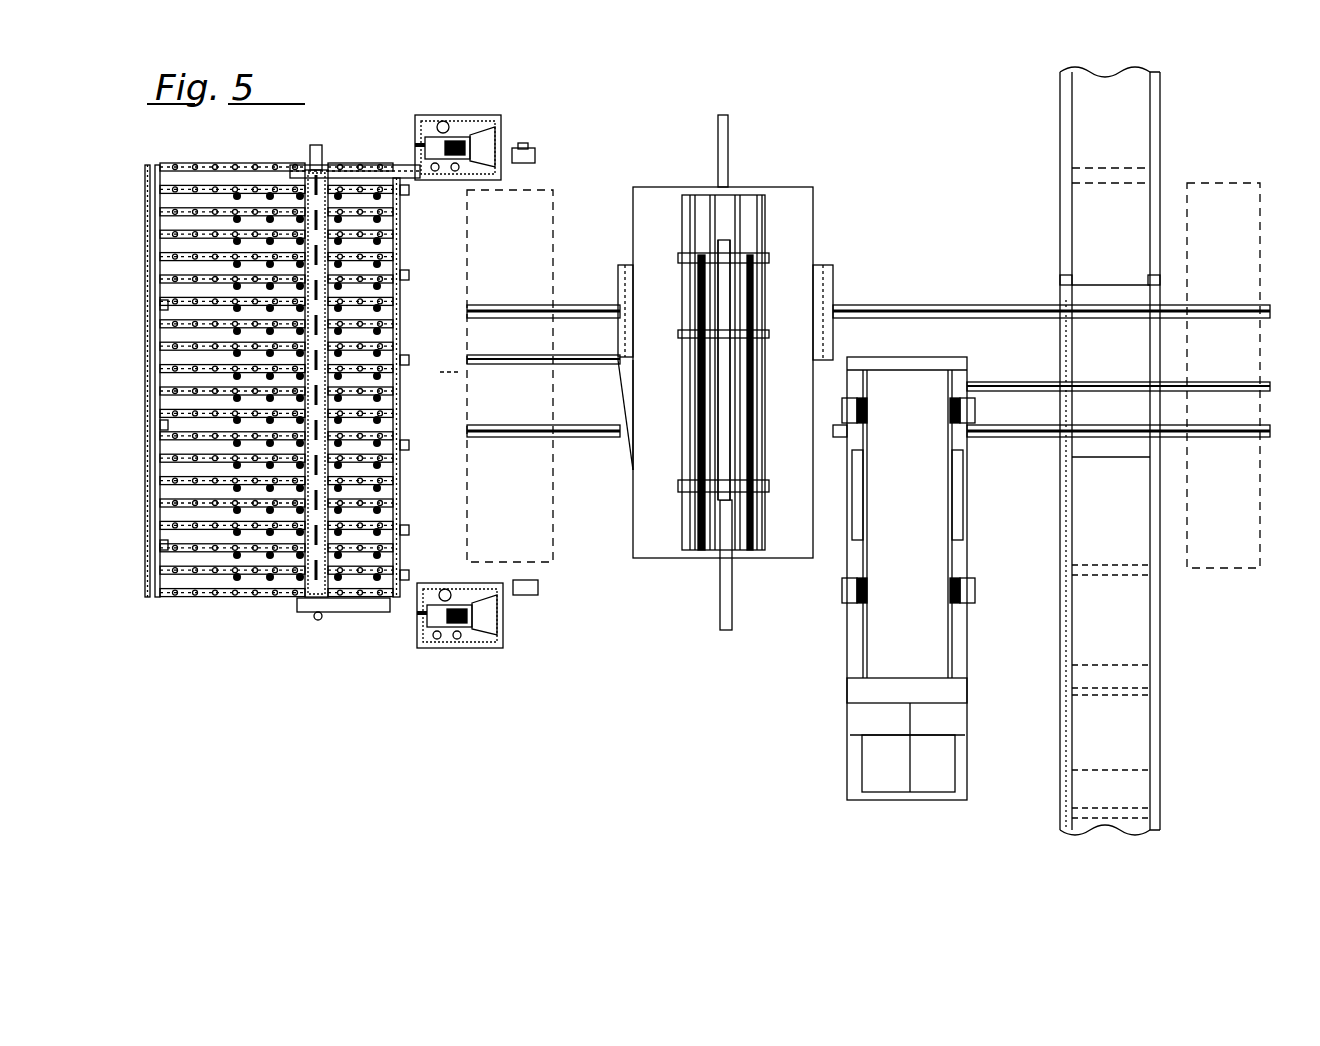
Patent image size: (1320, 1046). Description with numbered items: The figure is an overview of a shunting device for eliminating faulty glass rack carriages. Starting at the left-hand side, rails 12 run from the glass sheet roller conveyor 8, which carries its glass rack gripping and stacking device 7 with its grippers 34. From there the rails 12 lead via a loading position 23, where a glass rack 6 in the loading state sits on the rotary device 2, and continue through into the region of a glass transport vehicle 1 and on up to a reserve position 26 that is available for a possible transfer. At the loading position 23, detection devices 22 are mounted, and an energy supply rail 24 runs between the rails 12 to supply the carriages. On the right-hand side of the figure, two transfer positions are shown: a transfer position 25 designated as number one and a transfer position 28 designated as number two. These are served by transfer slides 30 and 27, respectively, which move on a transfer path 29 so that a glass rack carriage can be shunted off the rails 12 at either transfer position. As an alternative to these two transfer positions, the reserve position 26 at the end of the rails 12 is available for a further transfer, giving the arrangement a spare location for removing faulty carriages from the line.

The glass transport vehicle 1 is at (853, 610).
The rotary device 2 is at (628, 467).
The glass rack 6 is at (667, 547).
The glass rack gripping and stacking device 7 is at (432, 647).
The glass sheet roller conveyor 8 is at (197, 592).
The rails 12 is at (963, 315).
The detection devices 22 is at (525, 596).
The loading position 23 is at (540, 548).
The energy supply rail 24 is at (1018, 385).
The transfer position 25 is at (1095, 124).
The reserve position 26 is at (1244, 540).
The transfer slide 27 is at (1133, 710).
The transfer position 28 is at (1100, 628).
The transfer path 29 is at (1062, 540).
The transfer slide 30 is at (1090, 455).
The grippers 34 is at (240, 507).